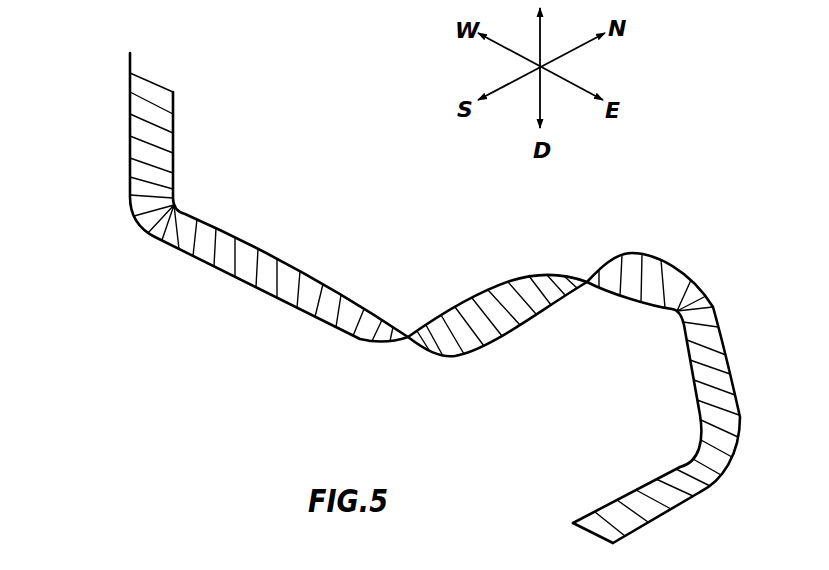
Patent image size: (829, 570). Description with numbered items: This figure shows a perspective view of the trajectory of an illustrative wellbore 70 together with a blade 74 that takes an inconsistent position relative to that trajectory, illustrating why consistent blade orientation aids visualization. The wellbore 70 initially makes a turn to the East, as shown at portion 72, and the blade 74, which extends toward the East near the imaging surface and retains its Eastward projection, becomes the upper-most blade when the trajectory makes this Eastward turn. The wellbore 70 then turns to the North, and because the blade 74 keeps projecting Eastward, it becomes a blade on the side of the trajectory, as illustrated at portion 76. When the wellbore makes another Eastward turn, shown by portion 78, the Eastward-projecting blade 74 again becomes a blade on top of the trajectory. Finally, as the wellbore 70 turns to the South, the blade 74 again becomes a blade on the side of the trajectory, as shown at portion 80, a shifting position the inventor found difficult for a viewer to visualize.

The wellbore 70 is at (130, 105).
The portion 72 is at (203, 288).
The blade 74 is at (173, 125).
The portion 76 is at (409, 318).
The portion 78 is at (690, 252).
The portion 80 is at (620, 488).